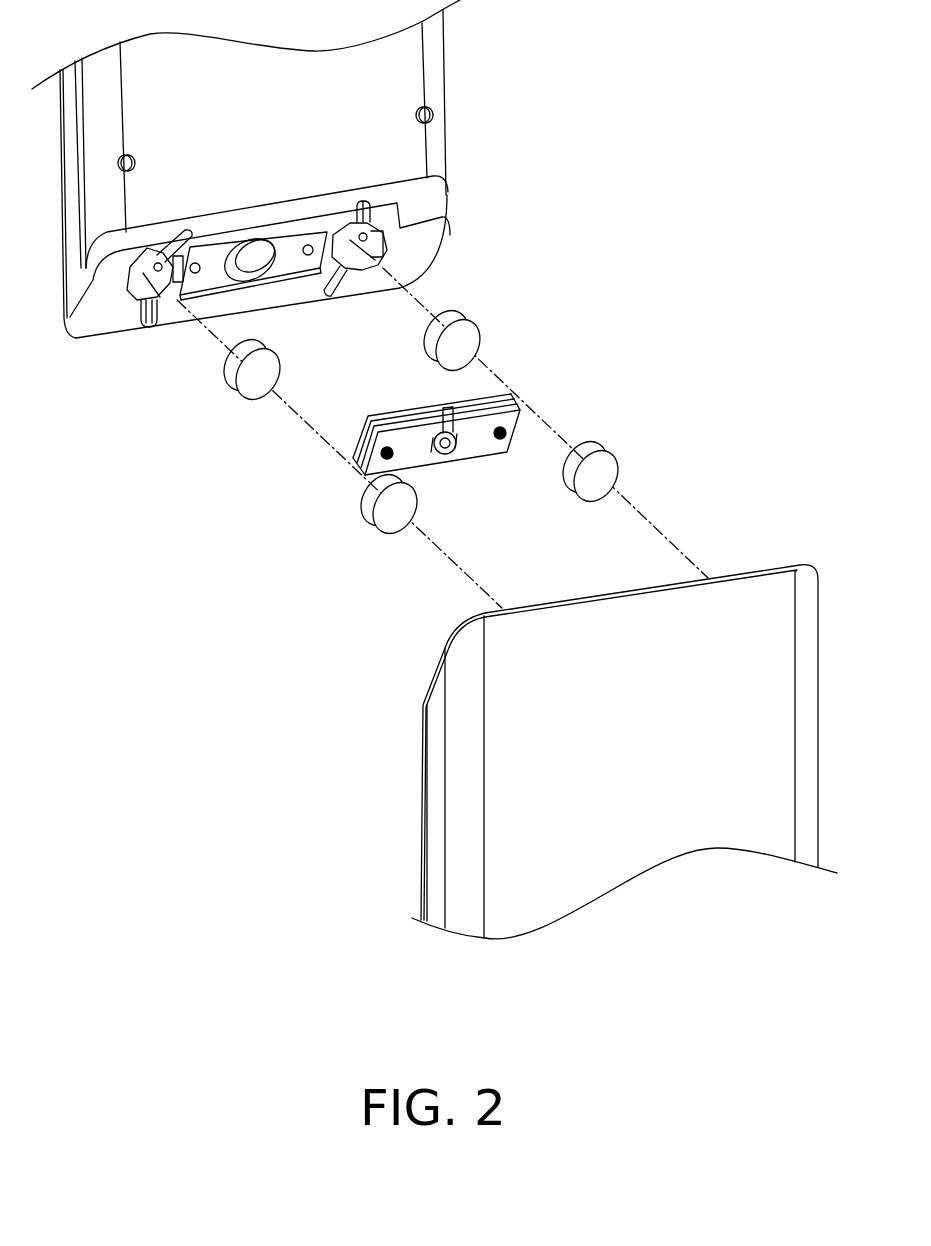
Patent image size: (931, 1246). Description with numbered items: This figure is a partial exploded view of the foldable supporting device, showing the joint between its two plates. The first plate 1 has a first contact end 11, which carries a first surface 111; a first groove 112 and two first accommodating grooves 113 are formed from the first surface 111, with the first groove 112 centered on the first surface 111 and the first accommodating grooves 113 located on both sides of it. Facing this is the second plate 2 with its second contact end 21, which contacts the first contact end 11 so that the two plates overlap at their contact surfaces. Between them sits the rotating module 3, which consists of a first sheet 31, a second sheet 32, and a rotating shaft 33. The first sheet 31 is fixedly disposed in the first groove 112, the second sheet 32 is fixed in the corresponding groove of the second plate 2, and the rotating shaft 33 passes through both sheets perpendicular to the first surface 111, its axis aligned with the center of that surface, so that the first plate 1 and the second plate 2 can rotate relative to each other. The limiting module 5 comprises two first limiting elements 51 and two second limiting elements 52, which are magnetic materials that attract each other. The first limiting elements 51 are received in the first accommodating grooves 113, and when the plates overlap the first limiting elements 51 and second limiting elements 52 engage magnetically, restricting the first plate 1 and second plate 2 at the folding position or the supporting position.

The first plate 1 is at (407, 85).
The first contact end 11 is at (411, 185).
The first surface 111 is at (408, 250).
The first groove 112 is at (283, 266).
The first accommodating grooves 113 is at (143, 302).
The second plate 2 is at (595, 752).
The second contact end 21 is at (435, 678).
The rotating module 3 is at (463, 453).
The first sheet 31 is at (436, 434).
The second sheet 32 is at (483, 450).
The rotating shaft 33 is at (447, 448).
The limiting module 5 is at (446, 453).
The first limiting elements 51 is at (255, 382).
The second limiting elements 52 is at (392, 515).